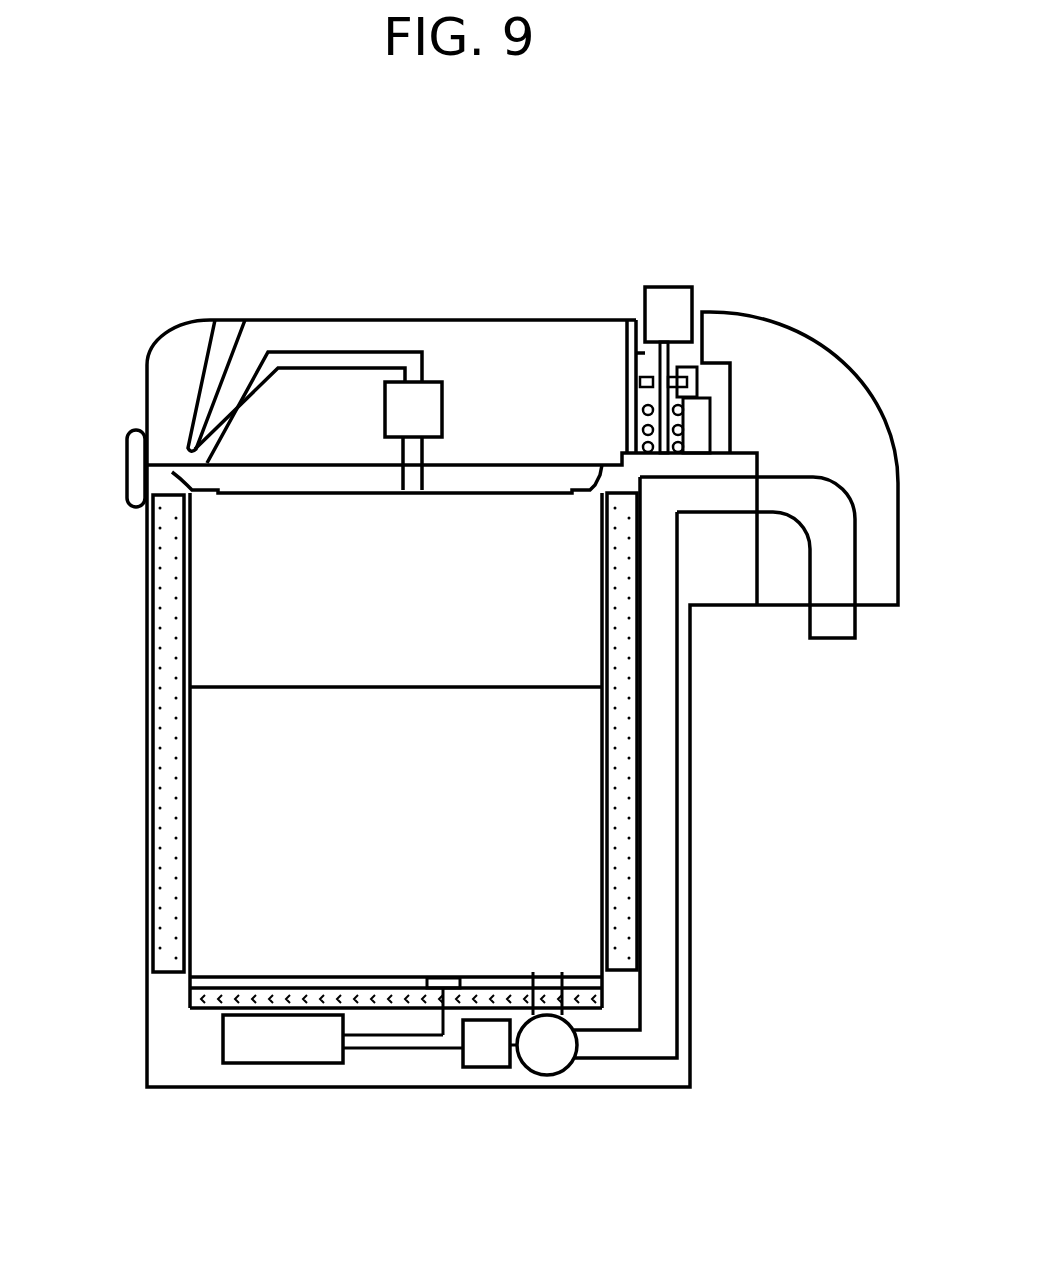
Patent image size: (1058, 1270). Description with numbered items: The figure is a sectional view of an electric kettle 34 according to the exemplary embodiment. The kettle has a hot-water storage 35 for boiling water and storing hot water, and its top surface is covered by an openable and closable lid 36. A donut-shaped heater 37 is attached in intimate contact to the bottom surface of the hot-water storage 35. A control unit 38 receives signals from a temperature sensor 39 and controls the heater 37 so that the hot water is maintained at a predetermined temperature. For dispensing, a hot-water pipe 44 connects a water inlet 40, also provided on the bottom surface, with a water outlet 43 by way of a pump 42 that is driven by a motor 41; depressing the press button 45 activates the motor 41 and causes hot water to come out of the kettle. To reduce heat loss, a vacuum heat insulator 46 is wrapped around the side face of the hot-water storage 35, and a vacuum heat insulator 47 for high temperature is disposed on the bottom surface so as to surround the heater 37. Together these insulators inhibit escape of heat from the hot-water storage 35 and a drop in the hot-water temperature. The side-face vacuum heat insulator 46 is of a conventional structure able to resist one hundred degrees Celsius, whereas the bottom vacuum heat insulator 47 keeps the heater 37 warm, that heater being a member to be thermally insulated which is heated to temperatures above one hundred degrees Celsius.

The electric kettle 34 is at (692, 848).
The hot-water storage 35 is at (187, 920).
The lid 36 is at (425, 318).
The donut-shaped heater 37 is at (192, 983).
The control unit 38 is at (220, 1040).
The temperature sensor 39 is at (427, 1010).
The water inlet 40 is at (543, 973).
The motor 41 is at (463, 1058).
The pump 42 is at (543, 1075).
The water outlet 43 is at (833, 638).
The hot-water pipe 44 is at (660, 958).
The press button 45 is at (672, 287).
The vacuum heat insulator 46 is at (163, 717).
The vacuum heat insulator for high temperature 47 is at (190, 1003).